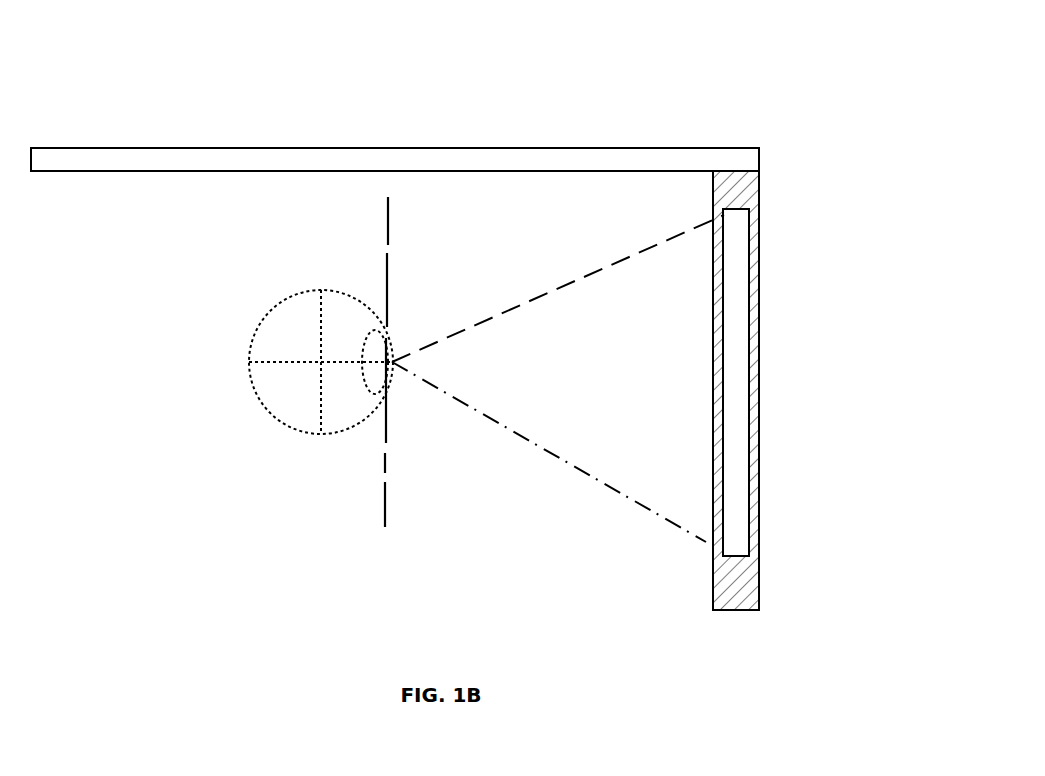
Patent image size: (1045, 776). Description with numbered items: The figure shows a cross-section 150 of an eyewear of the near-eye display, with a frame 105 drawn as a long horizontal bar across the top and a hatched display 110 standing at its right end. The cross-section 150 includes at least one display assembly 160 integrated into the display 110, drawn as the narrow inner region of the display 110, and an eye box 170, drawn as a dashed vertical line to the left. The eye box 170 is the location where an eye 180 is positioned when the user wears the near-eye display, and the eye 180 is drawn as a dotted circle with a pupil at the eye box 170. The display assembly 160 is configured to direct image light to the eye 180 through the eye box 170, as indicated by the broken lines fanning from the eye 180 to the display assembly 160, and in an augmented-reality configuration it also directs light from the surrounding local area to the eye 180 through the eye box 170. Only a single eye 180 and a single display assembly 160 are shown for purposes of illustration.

The cross-section 150 is at (115, 43).
The frame 105 is at (625, 148).
The display 110 is at (760, 497).
The display assembly 160 is at (732, 278).
The eye box 170 is at (386, 452).
The eye 180 is at (288, 300).